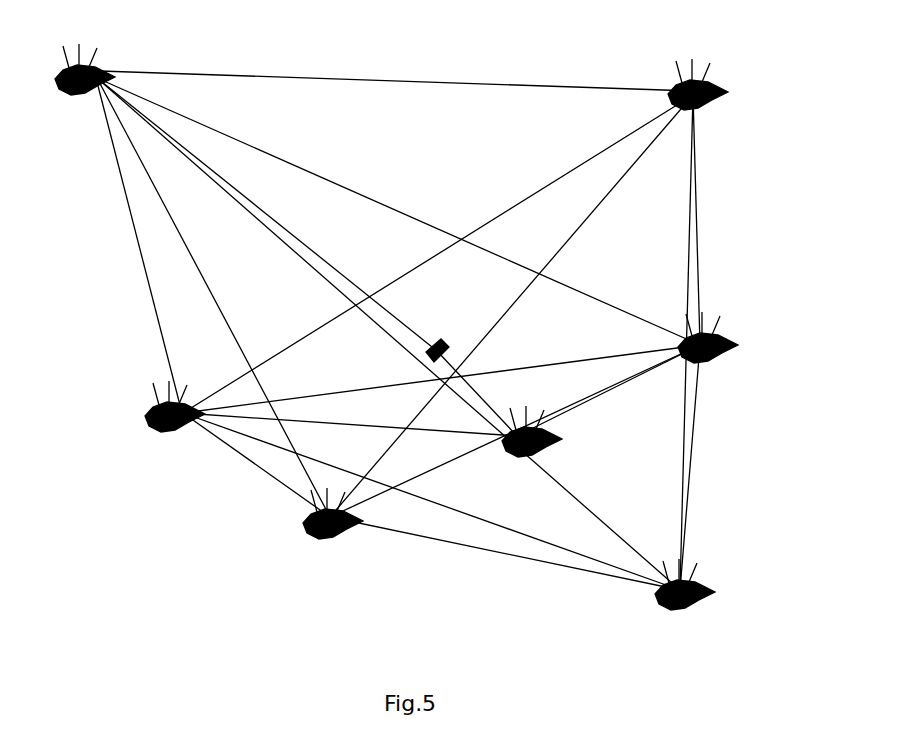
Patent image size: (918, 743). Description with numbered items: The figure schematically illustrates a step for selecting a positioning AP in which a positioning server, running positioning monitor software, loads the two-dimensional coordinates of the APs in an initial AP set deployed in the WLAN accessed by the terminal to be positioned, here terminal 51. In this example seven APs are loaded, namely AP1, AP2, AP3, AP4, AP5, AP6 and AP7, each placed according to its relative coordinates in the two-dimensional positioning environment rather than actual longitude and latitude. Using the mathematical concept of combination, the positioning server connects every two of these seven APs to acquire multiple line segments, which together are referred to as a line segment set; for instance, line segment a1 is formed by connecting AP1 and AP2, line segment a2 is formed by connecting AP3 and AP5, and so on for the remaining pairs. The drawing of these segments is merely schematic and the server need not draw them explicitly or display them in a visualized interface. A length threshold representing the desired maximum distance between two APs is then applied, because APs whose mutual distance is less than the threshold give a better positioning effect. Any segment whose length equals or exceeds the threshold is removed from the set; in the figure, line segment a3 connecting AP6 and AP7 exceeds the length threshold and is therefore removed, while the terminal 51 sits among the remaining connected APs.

The terminal 51 is at (443, 339).
The access point AP1 is at (718, 84).
The access point AP2 is at (175, 417).
The access point AP3 is at (330, 524).
The access point AP4 is at (556, 431).
The access point AP5 is at (718, 348).
The access point AP6 is at (102, 68).
The access point AP7 is at (708, 584).
The line segment a1 is at (438, 254).
The line segment a2 is at (608, 390).
The line segment a3 is at (598, 513).